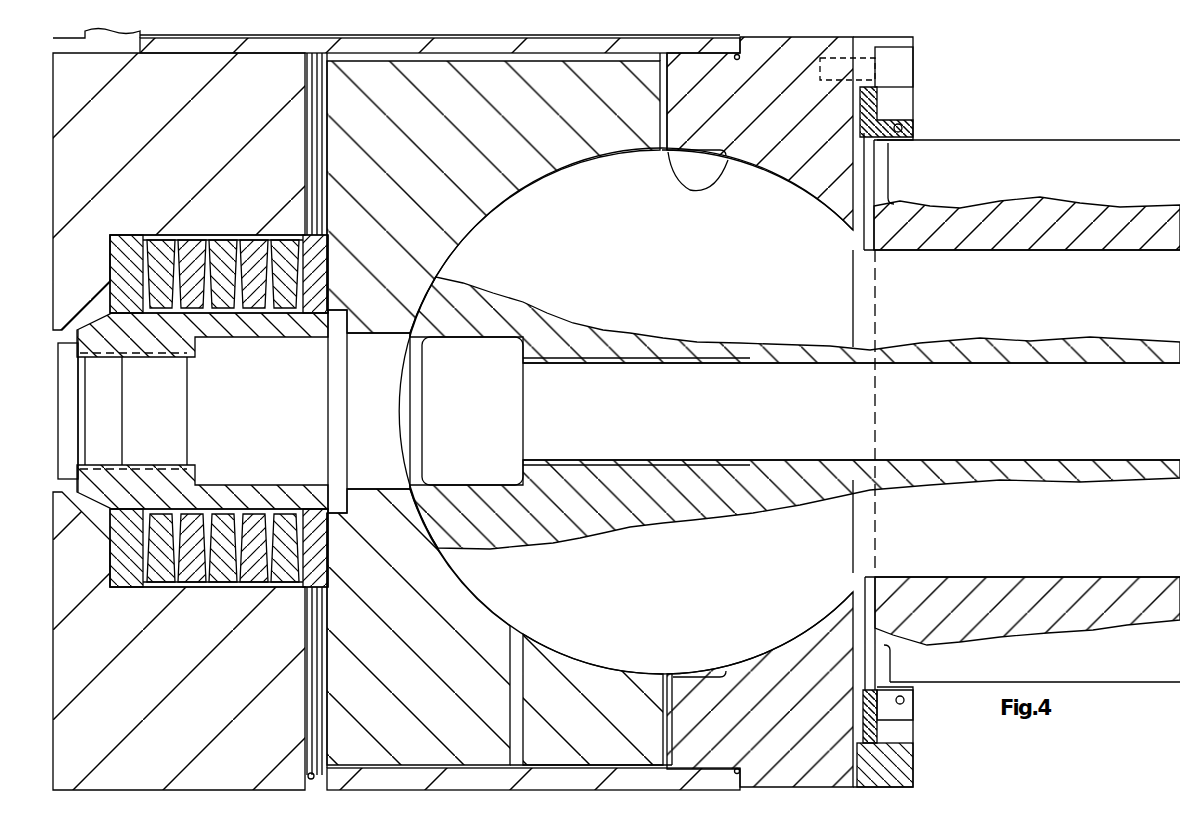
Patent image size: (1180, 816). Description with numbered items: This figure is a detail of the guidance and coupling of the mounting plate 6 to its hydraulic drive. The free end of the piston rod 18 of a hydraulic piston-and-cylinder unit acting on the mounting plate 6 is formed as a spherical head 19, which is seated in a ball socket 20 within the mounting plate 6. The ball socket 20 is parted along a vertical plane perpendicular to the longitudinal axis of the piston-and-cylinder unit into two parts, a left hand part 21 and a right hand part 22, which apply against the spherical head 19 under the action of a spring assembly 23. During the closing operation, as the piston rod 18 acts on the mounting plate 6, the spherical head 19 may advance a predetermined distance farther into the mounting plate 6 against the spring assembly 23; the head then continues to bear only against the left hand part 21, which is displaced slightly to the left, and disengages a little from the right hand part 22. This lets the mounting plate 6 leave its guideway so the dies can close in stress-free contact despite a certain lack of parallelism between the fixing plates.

The mounting plate 6 is at (253, 655).
The piston rod 18 is at (1006, 157).
The spherical head 19 is at (698, 163).
The ball socket 20 is at (575, 167).
The left hand part of the ball socket 21 is at (600, 678).
The right hand part of the ball socket 22 is at (778, 668).
The spring assembly 23 is at (192, 250).